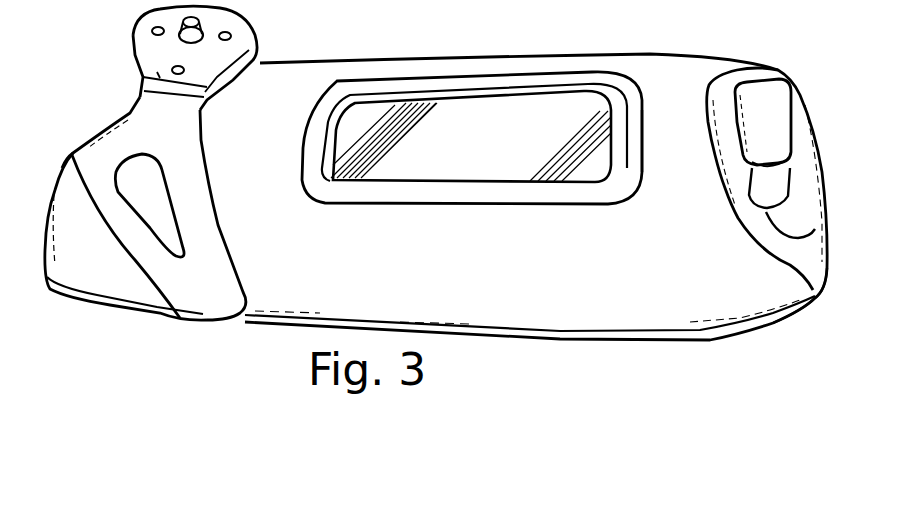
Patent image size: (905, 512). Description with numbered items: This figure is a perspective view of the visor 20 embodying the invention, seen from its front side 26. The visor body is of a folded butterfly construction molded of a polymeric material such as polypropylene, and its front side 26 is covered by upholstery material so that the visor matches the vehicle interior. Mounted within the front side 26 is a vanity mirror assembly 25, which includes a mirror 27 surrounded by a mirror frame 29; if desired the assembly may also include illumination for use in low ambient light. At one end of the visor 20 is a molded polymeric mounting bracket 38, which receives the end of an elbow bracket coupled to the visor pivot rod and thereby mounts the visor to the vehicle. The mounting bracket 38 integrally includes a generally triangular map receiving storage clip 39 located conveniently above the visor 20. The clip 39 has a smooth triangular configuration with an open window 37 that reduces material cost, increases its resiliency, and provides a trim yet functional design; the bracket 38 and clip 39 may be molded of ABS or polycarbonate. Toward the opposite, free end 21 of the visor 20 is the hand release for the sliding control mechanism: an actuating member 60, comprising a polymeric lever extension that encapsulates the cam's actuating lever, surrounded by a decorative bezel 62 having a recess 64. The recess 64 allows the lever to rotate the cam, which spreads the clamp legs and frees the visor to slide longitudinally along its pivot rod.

The visor 20 is at (593, 48).
The free end 21 is at (806, 312).
The vanity mirror assembly 25 is at (432, 203).
The front side 26 is at (580, 315).
The mirror 27 is at (494, 148).
The mirror frame 29 is at (640, 145).
The open window 37 is at (164, 222).
The mounting bracket 38 is at (248, 22).
The map receiving storage clip 39 is at (88, 192).
The actuating member 60 is at (767, 145).
The decorative bezel 62 is at (778, 72).
The recess 64 is at (770, 192).